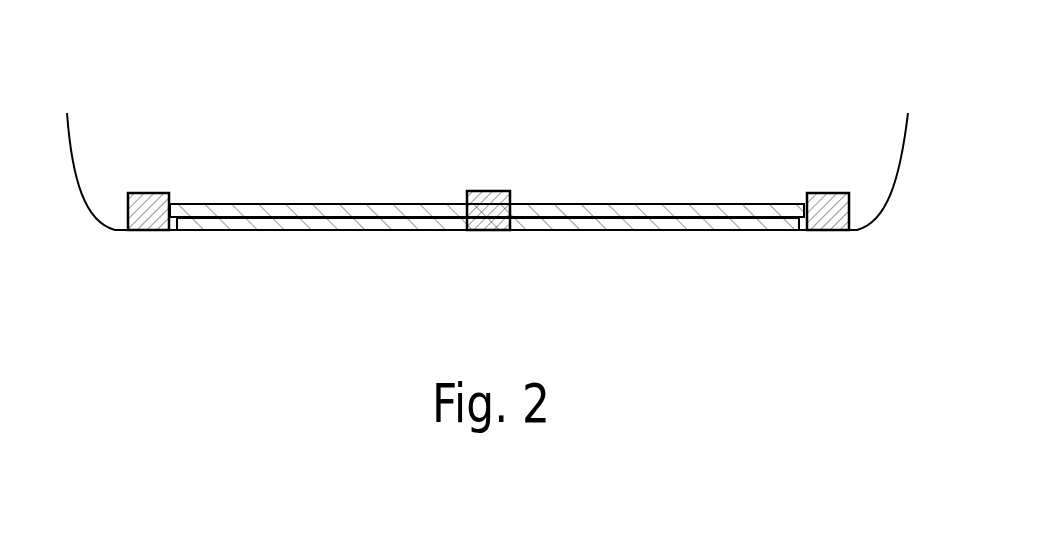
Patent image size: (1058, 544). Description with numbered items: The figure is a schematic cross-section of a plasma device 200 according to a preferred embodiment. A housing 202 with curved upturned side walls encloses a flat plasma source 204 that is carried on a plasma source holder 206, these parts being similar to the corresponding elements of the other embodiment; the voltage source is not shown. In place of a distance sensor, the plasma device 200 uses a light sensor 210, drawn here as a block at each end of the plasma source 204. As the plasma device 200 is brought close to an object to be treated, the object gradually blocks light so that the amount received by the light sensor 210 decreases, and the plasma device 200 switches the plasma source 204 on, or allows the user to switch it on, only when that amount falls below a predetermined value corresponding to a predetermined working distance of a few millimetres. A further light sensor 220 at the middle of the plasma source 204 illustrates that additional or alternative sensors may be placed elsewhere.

The plasma device 200 is at (853, 105).
The housing 202 is at (87, 215).
The plasma source 204 is at (643, 223).
The plasma source holder 206 is at (720, 212).
The light sensor 210 is at (147, 220).
The light sensor 220 is at (485, 220).